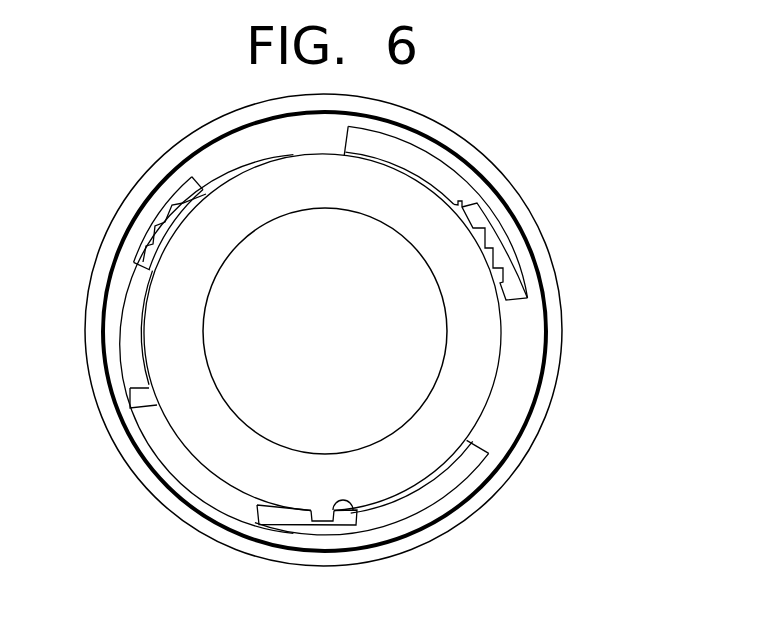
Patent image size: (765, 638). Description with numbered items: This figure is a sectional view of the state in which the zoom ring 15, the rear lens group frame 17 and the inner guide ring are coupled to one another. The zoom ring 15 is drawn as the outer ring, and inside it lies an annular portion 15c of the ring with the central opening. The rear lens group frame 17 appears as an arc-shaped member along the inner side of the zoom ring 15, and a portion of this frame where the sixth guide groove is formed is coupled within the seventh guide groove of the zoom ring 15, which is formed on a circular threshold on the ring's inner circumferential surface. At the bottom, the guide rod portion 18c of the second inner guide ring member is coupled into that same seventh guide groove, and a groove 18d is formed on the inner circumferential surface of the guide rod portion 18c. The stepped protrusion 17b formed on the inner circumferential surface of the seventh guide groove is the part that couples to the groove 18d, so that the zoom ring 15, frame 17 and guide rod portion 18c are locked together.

The zoom ring 15 is at (552, 260).
The annular flange of lens barrel 15c is at (472, 380).
The rear lens group frame 17 is at (143, 390).
The protrusion 17b is at (167, 238).
The guide rod portion 18c is at (296, 509).
The groove 18d is at (358, 523).